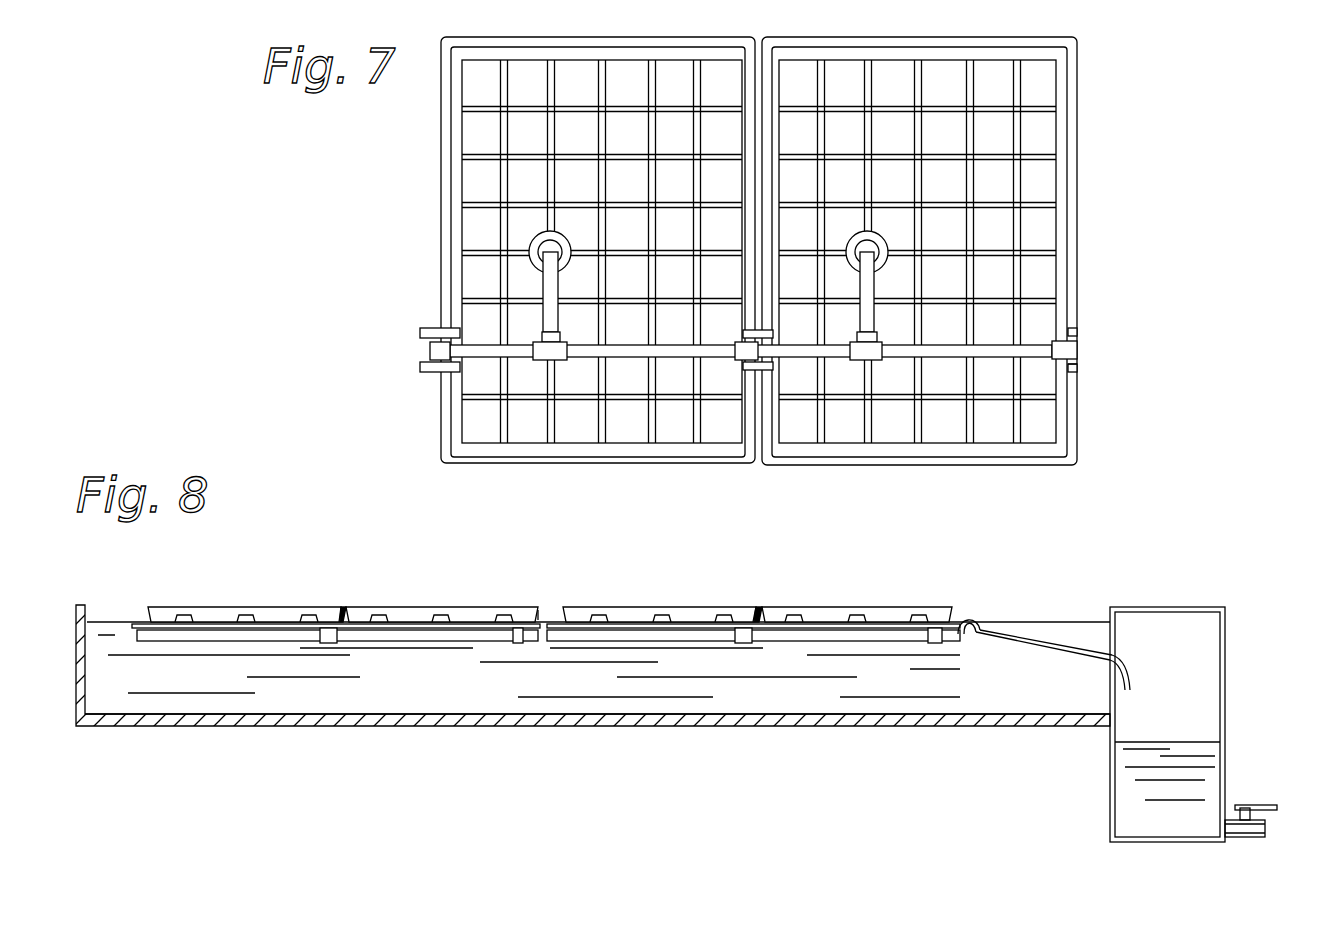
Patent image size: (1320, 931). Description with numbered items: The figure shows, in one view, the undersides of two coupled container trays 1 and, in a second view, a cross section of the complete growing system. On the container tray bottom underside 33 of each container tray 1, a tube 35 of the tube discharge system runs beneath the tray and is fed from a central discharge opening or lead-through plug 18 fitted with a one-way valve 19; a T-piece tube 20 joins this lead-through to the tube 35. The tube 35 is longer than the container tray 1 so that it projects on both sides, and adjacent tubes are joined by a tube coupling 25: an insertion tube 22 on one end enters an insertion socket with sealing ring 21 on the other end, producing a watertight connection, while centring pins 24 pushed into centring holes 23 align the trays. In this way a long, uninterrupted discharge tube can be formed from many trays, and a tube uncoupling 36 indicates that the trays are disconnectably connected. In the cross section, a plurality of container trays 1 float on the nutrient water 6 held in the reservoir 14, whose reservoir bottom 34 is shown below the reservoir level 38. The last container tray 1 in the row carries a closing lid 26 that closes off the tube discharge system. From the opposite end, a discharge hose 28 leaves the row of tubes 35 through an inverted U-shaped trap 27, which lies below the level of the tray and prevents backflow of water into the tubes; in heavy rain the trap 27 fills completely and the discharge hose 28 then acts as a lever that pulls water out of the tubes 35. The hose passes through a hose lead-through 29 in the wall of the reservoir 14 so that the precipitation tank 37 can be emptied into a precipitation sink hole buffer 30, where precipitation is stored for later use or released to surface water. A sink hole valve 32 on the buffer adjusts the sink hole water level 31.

In FIG. 8, the container tray 1 is at (400, 607).
In FIG. 8, the nutrient water 6 is at (498, 678).
In FIG. 8, the reservoir 14 is at (84, 672).
In FIG. 7, the discharge opening/lead-through plug 18 is at (543, 240).
In FIG. 7, the one-way valve 19 is at (475, 253).
In FIG. 7, the T-piece tube 20 is at (545, 354).
In FIG. 7, the insertion socket with sealing ring 21 is at (1078, 352).
In FIG. 7, the insertion tube 22 is at (430, 353).
In FIG. 7, the centring holes 23 is at (1078, 370).
In FIG. 7, the centring pins 24 is at (427, 362).
In FIG. 7, the tube coupling 25 is at (753, 355).
In FIG. 8, the tube coupling 25 is at (758, 612).
In FIG. 8, the closing lid for last tray 26 is at (130, 625).
In FIG. 8, the trap 27 is at (965, 622).
In FIG. 8, the discharge hose 28 is at (1060, 648).
In FIG. 8, the hose lead-through 29 is at (1115, 655).
In FIG. 8, the precipitation sink hole buffer 30 is at (1192, 633).
In FIG. 8, the sink hole water level 31 is at (1110, 742).
In FIG. 8, the sink hole valve 32 is at (1243, 805).
In FIG. 7, the container tray bottom underside 33 is at (990, 133).
In FIG. 8, the reservoir bottom 34 is at (690, 722).
In FIG. 7, the tube 35 is at (869, 290).
In FIG. 8, the tube 35 is at (875, 638).
In FIG. 8, the tube uncoupling 36 is at (550, 613).
In FIG. 8, the precipitation tank 37 is at (1133, 683).
In FIG. 8, the reservoir level 38 is at (1017, 622).